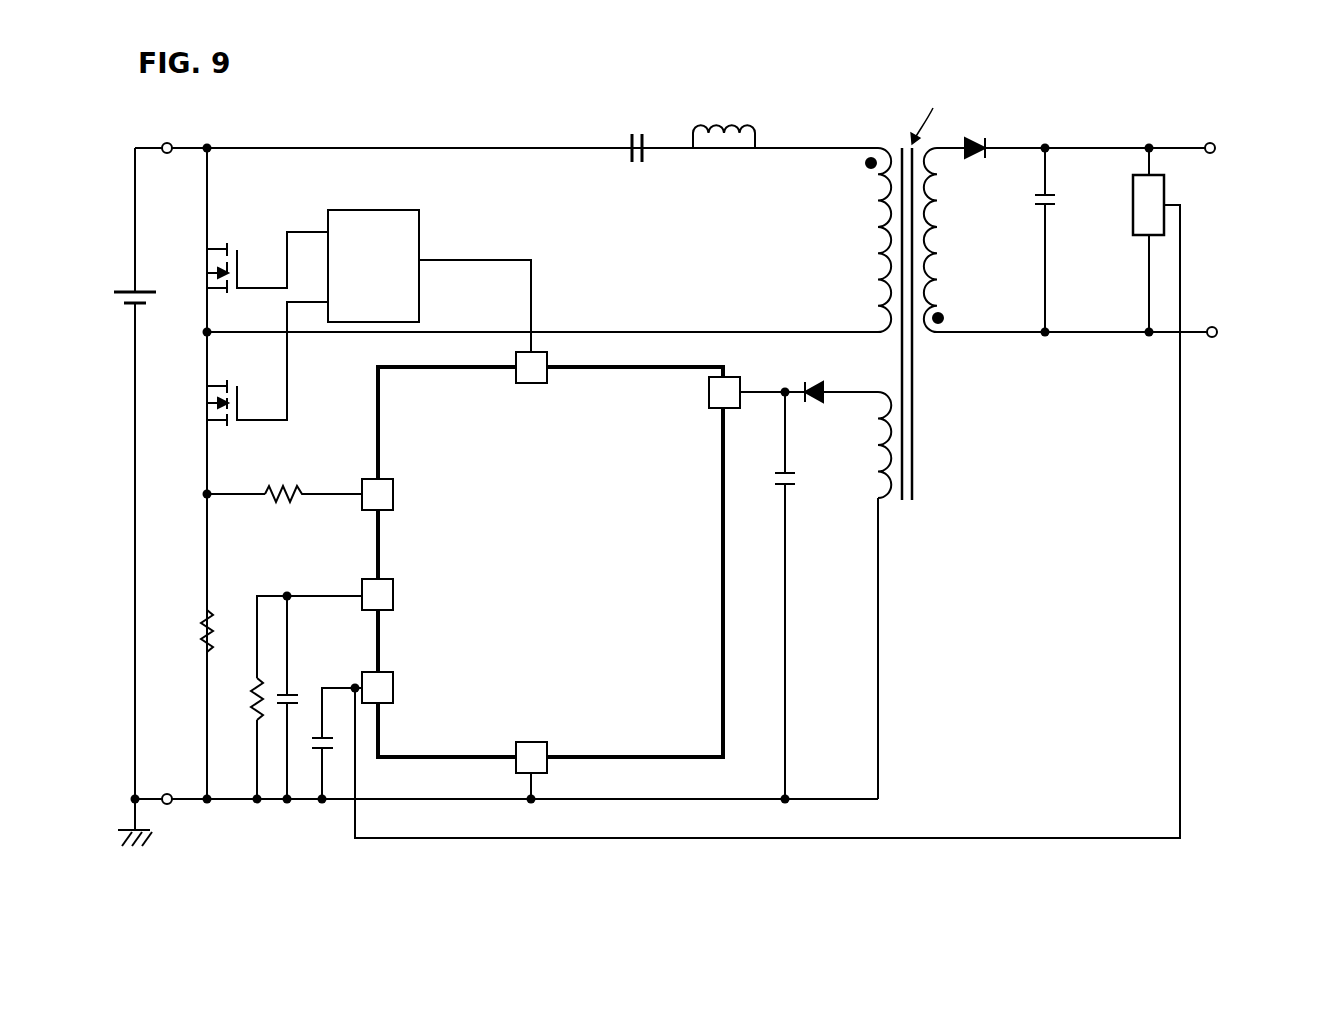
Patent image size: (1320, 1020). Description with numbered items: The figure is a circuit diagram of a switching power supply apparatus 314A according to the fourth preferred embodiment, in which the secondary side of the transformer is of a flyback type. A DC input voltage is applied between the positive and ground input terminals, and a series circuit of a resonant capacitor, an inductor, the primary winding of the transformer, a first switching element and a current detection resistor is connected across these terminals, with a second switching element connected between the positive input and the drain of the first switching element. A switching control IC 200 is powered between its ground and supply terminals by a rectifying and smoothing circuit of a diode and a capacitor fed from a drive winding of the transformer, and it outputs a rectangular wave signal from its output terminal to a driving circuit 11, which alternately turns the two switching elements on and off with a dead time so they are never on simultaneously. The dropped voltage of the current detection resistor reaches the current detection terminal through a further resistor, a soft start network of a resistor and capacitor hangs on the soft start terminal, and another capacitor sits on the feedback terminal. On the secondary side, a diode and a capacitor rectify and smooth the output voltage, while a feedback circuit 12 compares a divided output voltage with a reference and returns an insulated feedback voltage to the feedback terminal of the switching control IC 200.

The driving circuit 11 is at (390, 210).
The switching control IC 200 is at (622, 367).
The feedback circuit 12 is at (1164, 182).
The switching power supply apparatus 314A is at (1193, 112).